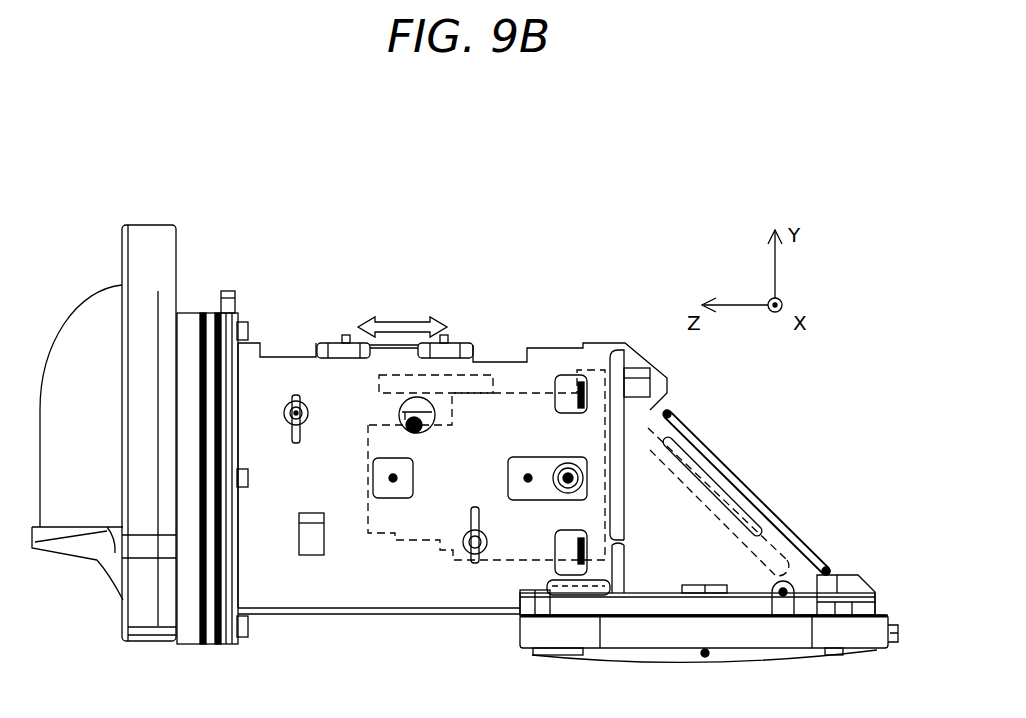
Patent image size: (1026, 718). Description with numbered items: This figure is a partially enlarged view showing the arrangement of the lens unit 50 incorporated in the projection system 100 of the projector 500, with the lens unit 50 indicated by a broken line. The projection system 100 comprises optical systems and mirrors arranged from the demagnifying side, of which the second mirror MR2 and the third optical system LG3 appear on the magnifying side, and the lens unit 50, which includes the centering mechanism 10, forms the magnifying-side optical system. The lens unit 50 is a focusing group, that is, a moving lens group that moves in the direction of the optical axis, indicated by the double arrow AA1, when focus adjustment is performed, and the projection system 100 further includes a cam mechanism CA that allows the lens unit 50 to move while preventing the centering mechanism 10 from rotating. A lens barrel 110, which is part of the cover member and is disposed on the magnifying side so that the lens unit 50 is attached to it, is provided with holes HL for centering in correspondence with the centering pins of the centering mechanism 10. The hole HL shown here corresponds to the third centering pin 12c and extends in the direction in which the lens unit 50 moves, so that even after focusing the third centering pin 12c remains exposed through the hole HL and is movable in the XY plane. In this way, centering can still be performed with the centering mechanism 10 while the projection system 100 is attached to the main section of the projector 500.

The projector 500 is at (247, 220).
The projection system 100 is at (290, 276).
The lens barrel 110 is at (279, 377).
The third optical system LG3 is at (525, 292).
The optical axis direction AA1 is at (390, 325).
The cam mechanism CA is at (450, 398).
The lens unit 50 is at (503, 423).
The centering mechanism 10 is at (571, 384).
The hole for centering HL is at (584, 485).
The third centering pin 12c is at (583, 473).
The second mirror MR2 is at (783, 565).